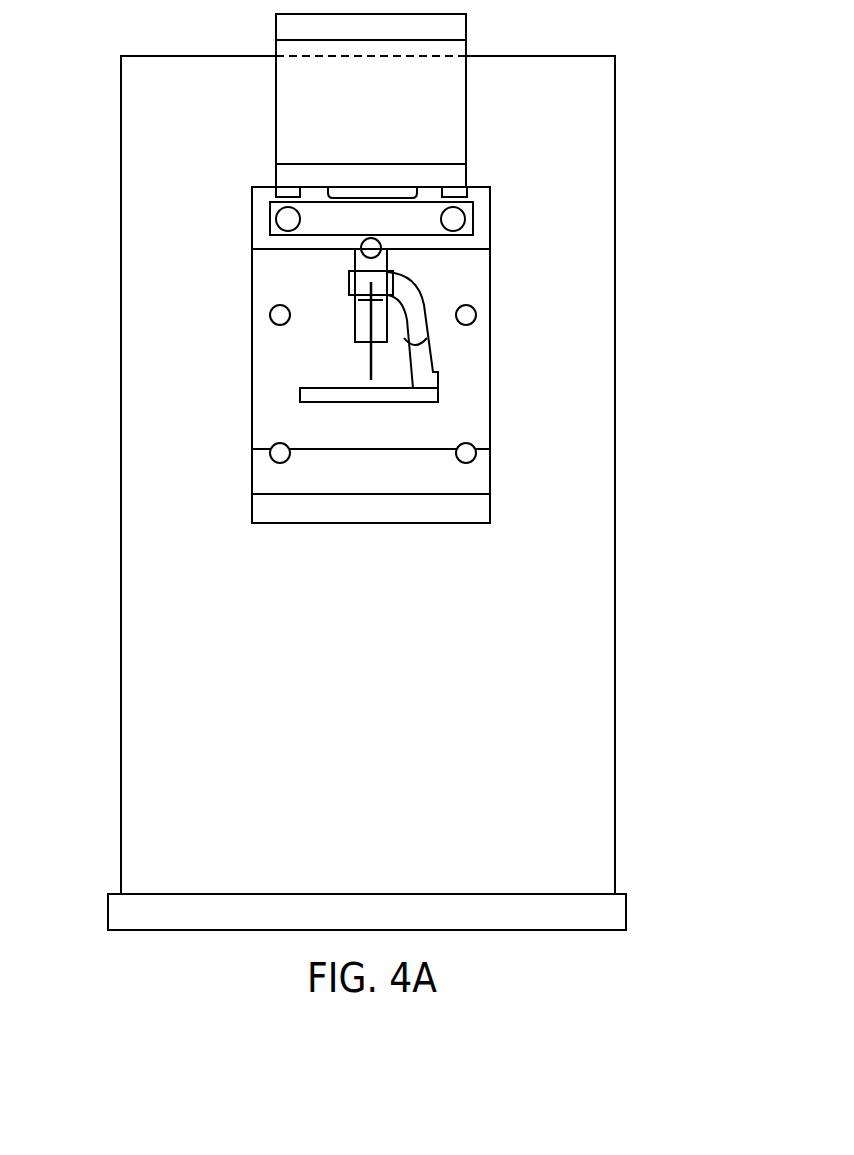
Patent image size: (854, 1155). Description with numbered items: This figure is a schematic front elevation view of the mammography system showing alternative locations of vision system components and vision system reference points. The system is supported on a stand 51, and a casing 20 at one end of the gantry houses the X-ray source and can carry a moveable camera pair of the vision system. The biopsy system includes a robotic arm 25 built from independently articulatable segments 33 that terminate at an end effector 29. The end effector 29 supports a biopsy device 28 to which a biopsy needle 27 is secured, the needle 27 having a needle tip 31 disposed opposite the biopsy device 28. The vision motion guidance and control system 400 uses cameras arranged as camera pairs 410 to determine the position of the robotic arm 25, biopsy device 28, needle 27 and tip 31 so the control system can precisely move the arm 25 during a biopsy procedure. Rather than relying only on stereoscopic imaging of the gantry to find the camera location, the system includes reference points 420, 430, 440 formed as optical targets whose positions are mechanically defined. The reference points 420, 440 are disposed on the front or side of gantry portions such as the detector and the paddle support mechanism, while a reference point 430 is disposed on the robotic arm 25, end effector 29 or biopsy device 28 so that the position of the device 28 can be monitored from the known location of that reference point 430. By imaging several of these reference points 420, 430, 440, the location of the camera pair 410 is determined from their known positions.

The casing 20 is at (244, 225).
The robotic arm 25 is at (349, 257).
The biopsy needle 27 is at (365, 362).
The biopsy device 28 is at (355, 325).
The end effector 29 is at (349, 277).
The needle tip 31 is at (460, 250).
The segment 33 is at (412, 448).
The stand 51 is at (616, 92).
The vision motion guidance and control system 400 is at (387, 222).
The camera pair 410 is at (420, 177).
The reference point 420 is at (270, 455).
The reference point 430 is at (480, 313).
The reference point 440 is at (269, 315).